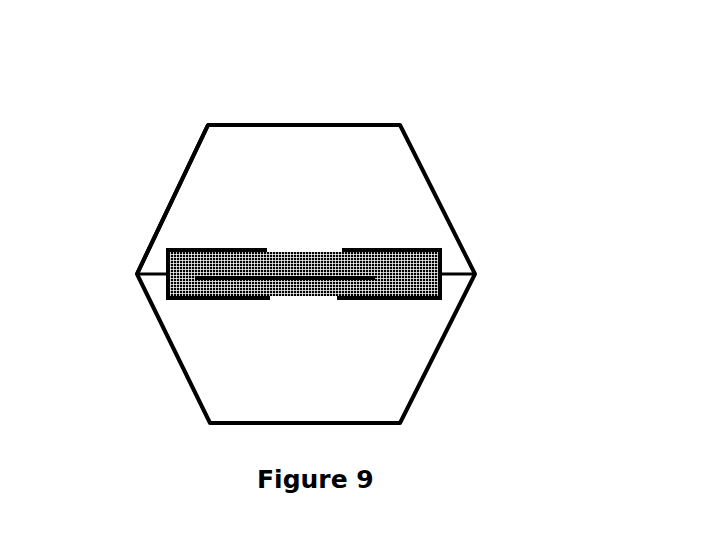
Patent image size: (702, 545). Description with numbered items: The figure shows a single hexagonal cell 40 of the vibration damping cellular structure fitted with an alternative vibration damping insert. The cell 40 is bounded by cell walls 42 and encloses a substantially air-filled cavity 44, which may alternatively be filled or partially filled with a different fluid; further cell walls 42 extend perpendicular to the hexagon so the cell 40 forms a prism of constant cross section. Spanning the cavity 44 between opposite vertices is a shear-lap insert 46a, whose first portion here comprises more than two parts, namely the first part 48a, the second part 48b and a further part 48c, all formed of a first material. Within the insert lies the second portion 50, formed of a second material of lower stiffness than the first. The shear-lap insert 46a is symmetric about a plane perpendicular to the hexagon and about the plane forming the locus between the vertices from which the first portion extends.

The cell 40 is at (179, 94).
The cell walls 42 is at (443, 208).
The cavity 44 is at (382, 352).
The shear-lap insert 46a is at (199, 203).
The first part 48a is at (425, 302).
The second part 48b is at (163, 273).
The conductor 48c is at (230, 280).
The second portion 50 is at (382, 258).